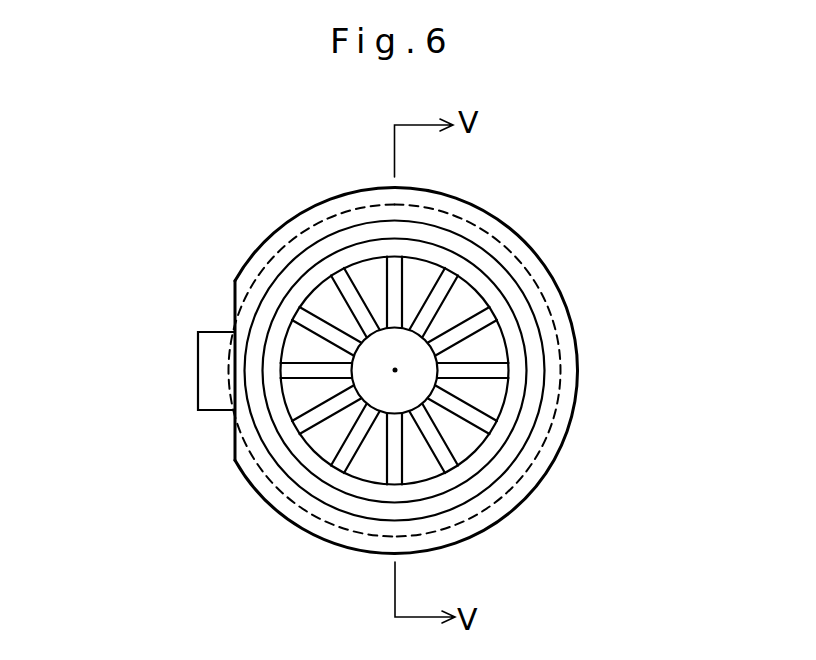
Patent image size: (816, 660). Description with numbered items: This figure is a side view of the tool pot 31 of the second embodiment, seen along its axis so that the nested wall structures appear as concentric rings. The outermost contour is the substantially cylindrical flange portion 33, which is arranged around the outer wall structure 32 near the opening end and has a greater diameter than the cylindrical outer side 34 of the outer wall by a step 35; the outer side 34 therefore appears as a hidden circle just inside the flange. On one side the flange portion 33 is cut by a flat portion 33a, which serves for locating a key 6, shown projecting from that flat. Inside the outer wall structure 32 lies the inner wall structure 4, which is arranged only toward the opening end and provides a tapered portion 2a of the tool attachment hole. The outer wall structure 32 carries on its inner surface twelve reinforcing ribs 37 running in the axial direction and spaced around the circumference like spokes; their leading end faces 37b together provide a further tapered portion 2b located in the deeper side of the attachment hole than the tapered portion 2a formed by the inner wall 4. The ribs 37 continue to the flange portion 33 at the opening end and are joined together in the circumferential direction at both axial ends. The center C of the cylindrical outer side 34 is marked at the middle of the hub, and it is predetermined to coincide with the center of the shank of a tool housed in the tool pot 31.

The tool pot 31 is at (225, 257).
The outer wall structure 32 is at (533, 465).
The flange portion 33 is at (268, 488).
The flat portion 33a is at (233, 435).
The outer side 34 is at (318, 222).
The step 35 is at (480, 223).
The reinforcing ribs 37 is at (472, 312).
The leading end faces 37b is at (487, 320).
The tapered portion 2a is at (517, 352).
The tapered portion 2b is at (495, 370).
The inner wall structure 4 is at (527, 412).
The key 6 is at (208, 351).
The center C is at (395, 370).